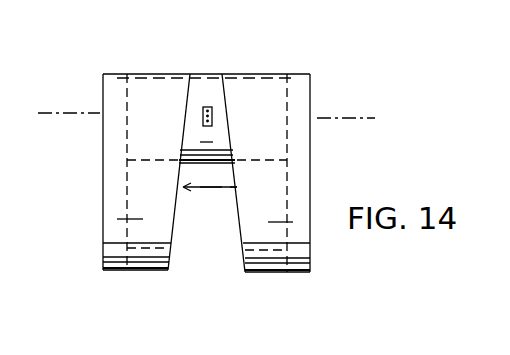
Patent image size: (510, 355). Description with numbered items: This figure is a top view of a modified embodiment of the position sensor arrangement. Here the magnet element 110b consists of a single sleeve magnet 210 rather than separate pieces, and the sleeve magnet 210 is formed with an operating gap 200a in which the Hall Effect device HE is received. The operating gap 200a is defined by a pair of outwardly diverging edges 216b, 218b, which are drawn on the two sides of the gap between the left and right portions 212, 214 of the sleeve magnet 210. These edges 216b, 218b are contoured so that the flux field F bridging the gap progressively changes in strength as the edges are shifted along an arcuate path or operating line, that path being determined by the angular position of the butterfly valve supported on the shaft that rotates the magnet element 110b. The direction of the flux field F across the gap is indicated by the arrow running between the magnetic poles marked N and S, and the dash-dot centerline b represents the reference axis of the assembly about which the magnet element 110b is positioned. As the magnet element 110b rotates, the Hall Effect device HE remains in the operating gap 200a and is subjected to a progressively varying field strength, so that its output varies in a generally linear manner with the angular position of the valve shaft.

The magnet element 110b is at (299, 73).
The left leg panel 212 is at (115, 98).
The right leg panel 214 is at (298, 99).
The sleeve magnet 210 is at (213, 82).
The operating gap 200a is at (212, 258).
The Hall Effect device HE is at (204, 106).
The fold axis b is at (360, 117).
The north direction N is at (197, 186).
The south direction S is at (240, 186).
The flux field F is at (213, 188).
The outwardly diverging edge 216b is at (173, 222).
The outwardly diverging edge 218b is at (240, 220).